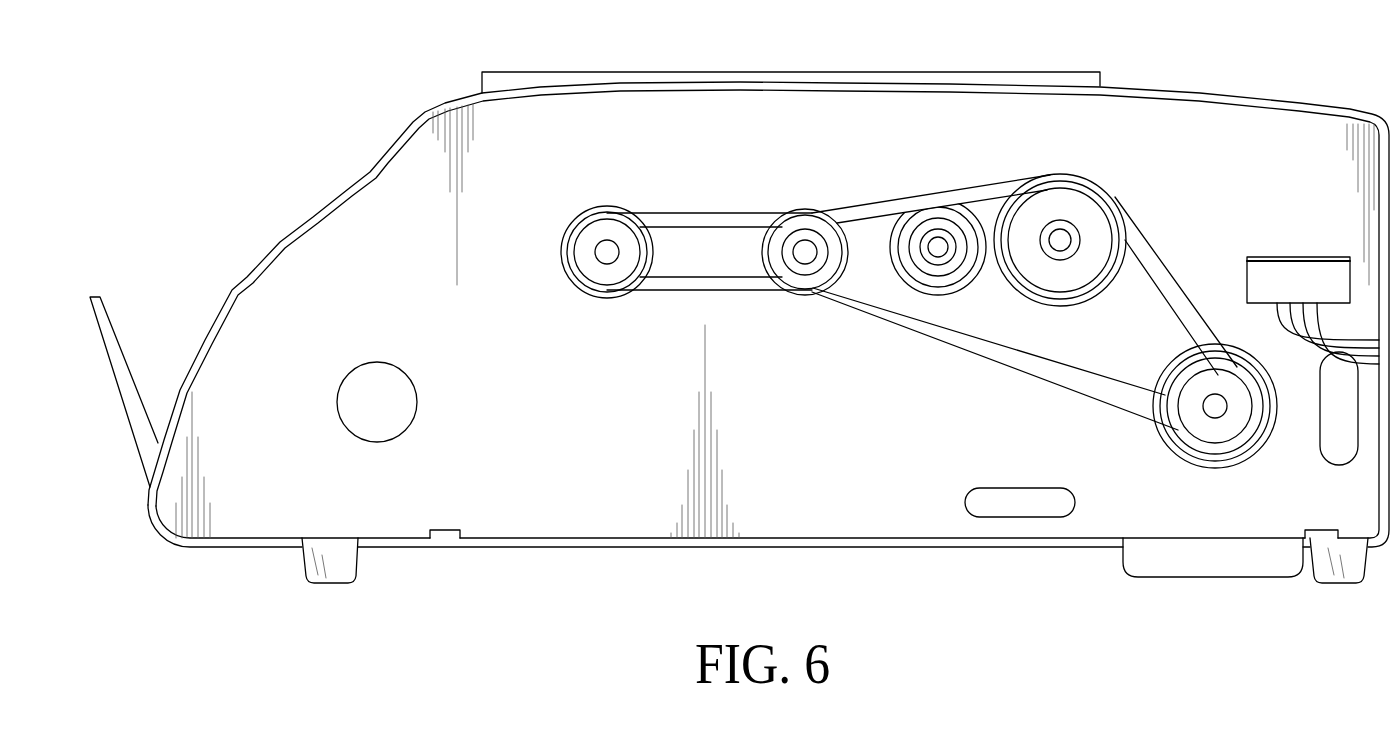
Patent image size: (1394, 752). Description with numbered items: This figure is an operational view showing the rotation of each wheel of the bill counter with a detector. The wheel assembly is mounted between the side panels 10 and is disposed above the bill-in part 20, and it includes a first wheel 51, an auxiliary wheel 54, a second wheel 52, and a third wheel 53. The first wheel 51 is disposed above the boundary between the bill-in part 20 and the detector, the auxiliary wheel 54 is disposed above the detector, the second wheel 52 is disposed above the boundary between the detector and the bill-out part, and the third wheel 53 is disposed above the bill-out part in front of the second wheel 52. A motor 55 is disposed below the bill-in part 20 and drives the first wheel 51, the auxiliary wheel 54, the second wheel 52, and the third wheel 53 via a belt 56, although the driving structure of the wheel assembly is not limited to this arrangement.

The side panel 10 is at (1293, 88).
The bill-in part 20 is at (1185, 74).
The first wheel 51 is at (1090, 217).
The second wheel 52 is at (805, 247).
The third wheel 53 is at (607, 247).
The auxiliary wheel 54 is at (937, 243).
The motor 55 is at (1210, 433).
The belt 56 is at (1158, 268).